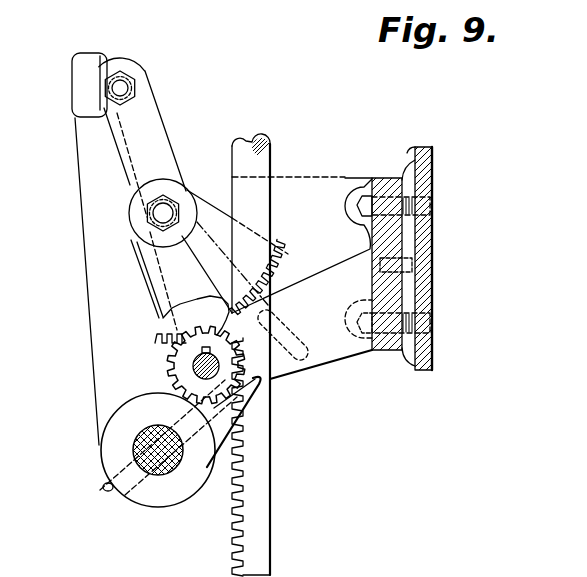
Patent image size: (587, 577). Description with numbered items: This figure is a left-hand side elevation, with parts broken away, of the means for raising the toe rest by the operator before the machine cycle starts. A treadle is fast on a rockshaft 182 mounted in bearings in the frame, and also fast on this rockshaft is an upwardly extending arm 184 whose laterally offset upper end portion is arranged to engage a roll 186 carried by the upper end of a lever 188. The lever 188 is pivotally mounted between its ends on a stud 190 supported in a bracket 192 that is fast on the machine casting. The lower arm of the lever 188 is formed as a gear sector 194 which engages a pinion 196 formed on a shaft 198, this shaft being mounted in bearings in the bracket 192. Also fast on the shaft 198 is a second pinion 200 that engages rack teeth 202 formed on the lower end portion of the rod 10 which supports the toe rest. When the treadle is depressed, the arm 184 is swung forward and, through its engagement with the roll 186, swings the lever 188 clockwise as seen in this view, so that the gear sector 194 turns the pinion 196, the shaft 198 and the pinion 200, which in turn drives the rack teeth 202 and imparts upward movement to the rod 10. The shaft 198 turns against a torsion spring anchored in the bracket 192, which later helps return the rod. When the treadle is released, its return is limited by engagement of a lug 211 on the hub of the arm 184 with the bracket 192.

The rod 10 is at (263, 462).
The rockshaft 182 is at (138, 443).
The arm 184 is at (90, 227).
The roll 186 is at (104, 89).
The lever 188 is at (158, 127).
The stud 190 is at (169, 204).
The bracket 192 is at (346, 354).
The gear sector 194 is at (163, 320).
The pinion 196 is at (160, 335).
The shaft 198 is at (194, 358).
The pinion 200 is at (190, 372).
The rack teeth 202 is at (240, 526).
The lug 211 is at (263, 409).